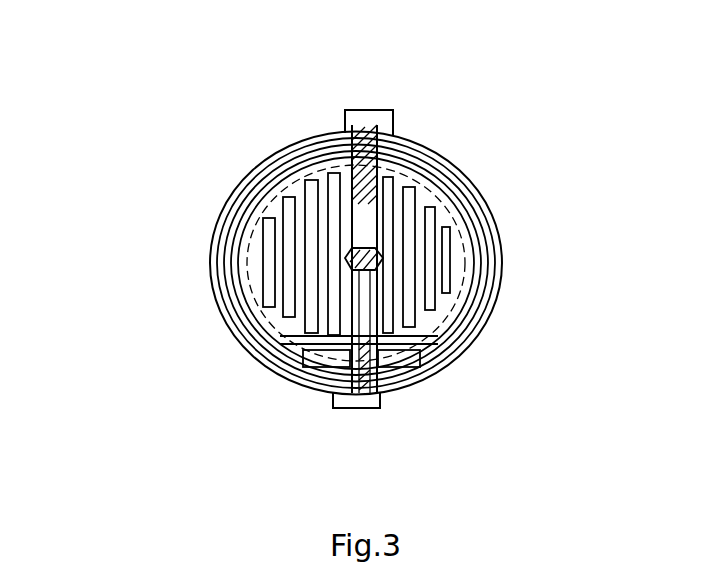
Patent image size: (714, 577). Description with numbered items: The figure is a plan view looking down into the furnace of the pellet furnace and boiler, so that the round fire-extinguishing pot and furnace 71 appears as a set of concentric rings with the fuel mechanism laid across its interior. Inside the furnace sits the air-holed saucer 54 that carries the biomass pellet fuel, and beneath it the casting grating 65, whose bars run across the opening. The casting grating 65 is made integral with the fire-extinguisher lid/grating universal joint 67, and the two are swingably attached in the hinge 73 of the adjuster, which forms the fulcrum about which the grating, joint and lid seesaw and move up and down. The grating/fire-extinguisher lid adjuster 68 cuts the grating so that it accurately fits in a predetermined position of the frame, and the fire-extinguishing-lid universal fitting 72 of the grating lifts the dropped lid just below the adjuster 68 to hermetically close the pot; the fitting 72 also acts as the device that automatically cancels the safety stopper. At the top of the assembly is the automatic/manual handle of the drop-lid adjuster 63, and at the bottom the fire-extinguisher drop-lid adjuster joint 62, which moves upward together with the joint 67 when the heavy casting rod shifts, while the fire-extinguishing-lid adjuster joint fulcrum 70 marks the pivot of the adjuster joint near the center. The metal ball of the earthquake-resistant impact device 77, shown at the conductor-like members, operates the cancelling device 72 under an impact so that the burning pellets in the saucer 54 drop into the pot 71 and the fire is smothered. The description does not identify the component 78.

The air-holed saucer 54 is at (288, 263).
The fire-extinguisher drop-lid adjuster joint 62 is at (450, 437).
The automatic/manual handle of the drop-lid adjuster 63 is at (294, 74).
The casting grating 65 is at (458, 225).
The fire-extinguisher lid/grating universal joint 67 is at (248, 394).
The grating/fire-extinguisher lid adjuster 68 is at (284, 264).
The fire-extinguishing-lid adjuster joint fulcrum 70 is at (491, 320).
The fire-extinguishing pot and furnace 71 is at (282, 242).
The fire-extinguishing-lid universal fitting 72 is at (337, 214).
The hinge 73 is at (462, 392).
The earthquake-resistant impact device metal ball 77 is at (489, 213).
The second ring 78 is at (277, 263).